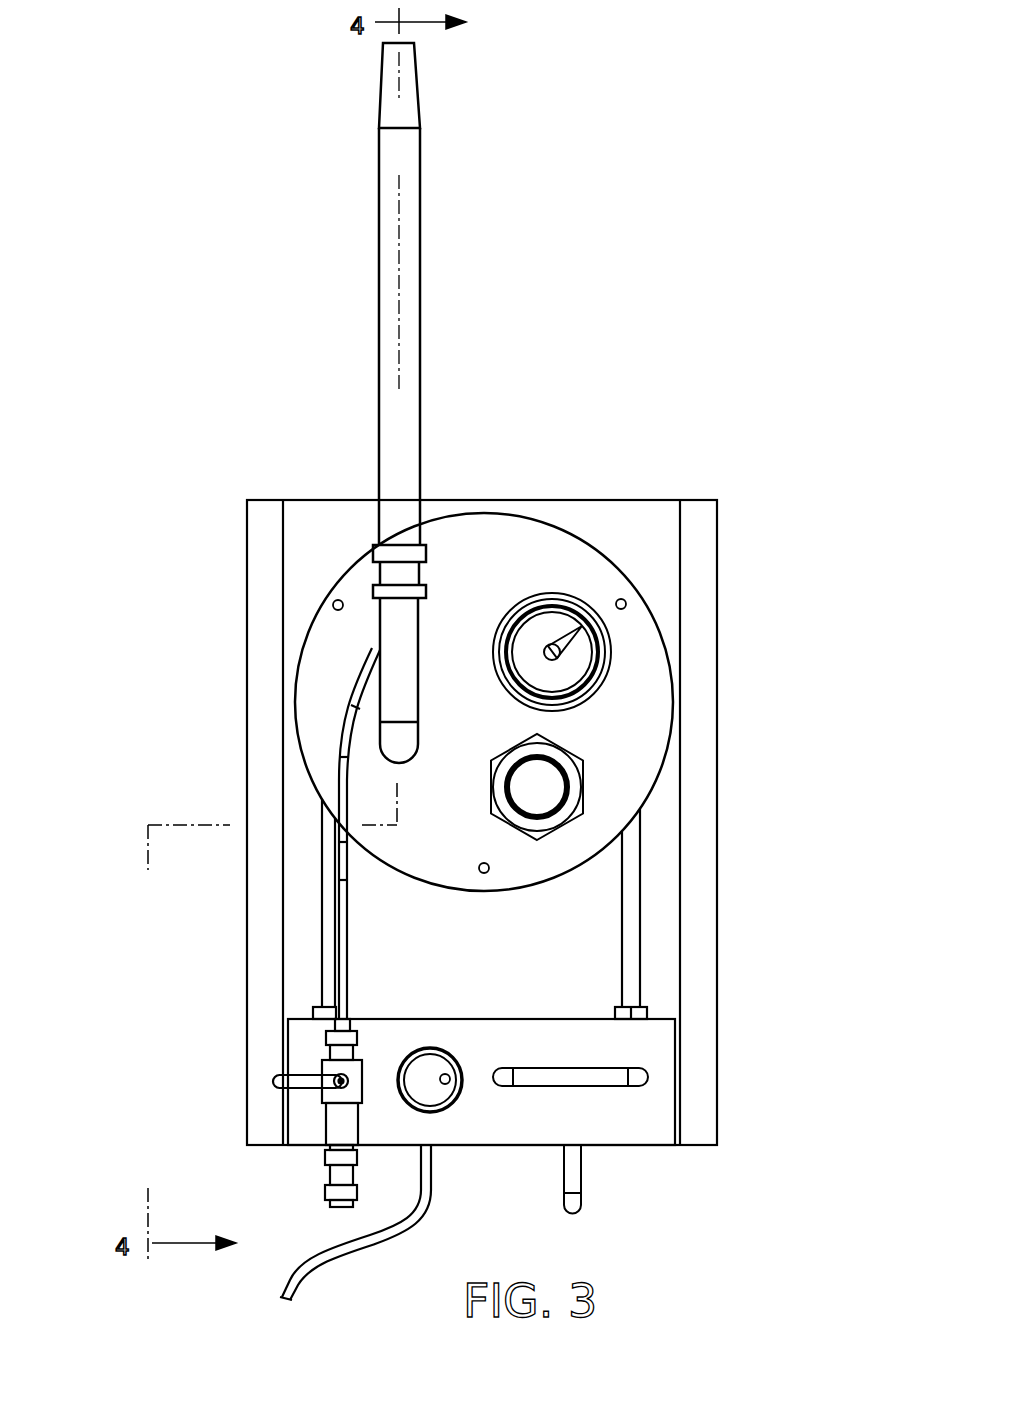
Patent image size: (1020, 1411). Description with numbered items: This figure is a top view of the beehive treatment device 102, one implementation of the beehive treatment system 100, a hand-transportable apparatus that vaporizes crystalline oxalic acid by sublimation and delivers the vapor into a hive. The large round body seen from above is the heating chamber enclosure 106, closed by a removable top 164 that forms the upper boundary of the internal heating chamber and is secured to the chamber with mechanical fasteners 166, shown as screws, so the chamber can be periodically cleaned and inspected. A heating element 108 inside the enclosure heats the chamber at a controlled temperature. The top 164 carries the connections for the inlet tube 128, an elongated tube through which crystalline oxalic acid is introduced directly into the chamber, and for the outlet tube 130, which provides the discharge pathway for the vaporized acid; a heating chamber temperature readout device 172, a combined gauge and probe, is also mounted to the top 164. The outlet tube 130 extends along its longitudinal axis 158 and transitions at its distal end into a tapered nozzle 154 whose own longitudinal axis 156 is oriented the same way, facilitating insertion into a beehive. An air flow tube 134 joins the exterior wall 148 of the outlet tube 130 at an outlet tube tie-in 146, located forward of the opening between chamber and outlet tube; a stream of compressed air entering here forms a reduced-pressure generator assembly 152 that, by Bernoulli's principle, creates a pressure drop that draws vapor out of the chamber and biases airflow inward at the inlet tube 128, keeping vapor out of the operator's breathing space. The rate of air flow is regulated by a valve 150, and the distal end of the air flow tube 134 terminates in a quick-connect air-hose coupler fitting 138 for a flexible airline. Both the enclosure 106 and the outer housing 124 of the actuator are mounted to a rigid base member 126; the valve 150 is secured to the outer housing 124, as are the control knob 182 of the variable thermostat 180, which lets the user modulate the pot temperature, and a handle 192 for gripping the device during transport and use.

The beehive treatment system 100 is at (228, 393).
The beehive treatment device 102 is at (210, 472).
The heating chamber enclosure 106 is at (618, 528).
The heating element 108 is at (612, 1016).
The outer housing 124 is at (676, 1040).
The rigid base member 126 is at (247, 906).
The inlet tube 128 is at (567, 774).
The outlet tube 130 is at (365, 233).
The air flow tube 134 is at (343, 735).
The air-hose coupler fitting 138 is at (325, 1186).
The outlet tube tie-in 146 is at (375, 655).
The exterior wall 148 is at (395, 672).
The valve 150 is at (322, 1105).
The reduced-pressure generator assembly 152 is at (318, 679).
The nozzle 154 is at (416, 105).
The longitudinal axis 156 is at (400, 58).
The longitudinal axis 158 is at (399, 277).
The removable top 164 is at (610, 715).
The mechanical fasteners 166 is at (335, 601).
The heating chamber temperature readout device 172 is at (612, 660).
The variable thermostat 180 is at (452, 1130).
The control knob 182 is at (425, 1047).
The handle 192 is at (650, 1078).